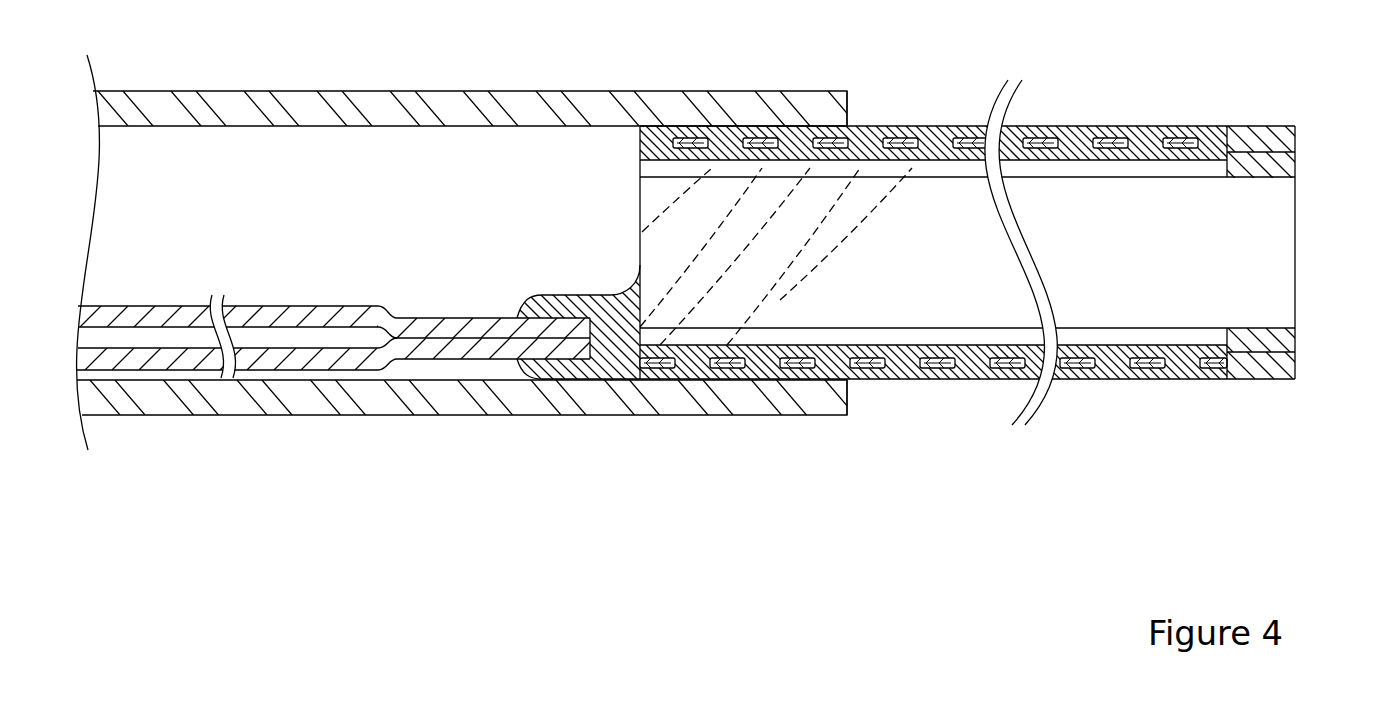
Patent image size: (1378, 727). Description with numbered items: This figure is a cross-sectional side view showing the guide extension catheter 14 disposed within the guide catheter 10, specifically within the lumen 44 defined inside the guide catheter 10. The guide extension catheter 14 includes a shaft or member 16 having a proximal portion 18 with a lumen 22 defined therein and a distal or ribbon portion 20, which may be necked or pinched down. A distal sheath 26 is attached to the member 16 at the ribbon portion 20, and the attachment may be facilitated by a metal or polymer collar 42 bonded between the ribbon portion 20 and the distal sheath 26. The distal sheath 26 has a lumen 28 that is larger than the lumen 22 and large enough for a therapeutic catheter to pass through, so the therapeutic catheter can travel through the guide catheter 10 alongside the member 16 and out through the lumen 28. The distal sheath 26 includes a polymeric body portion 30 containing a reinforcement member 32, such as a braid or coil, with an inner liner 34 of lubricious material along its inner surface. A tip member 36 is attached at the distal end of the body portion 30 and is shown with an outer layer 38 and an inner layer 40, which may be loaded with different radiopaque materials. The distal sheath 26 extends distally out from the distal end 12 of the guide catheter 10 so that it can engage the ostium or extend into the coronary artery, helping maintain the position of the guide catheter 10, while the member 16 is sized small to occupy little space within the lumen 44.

The guide catheter 10 is at (520, 102).
The distal end 12 is at (848, 397).
The guide extension catheter 14 is at (383, 212).
The member 16 is at (353, 372).
The proximal portion 18 is at (190, 363).
The ribbon portion 20 is at (563, 353).
The lumen 22 is at (152, 337).
The distal sheath 26 is at (1077, 124).
The lumen 28 is at (1253, 240).
The body portion 30 is at (1175, 125).
The reinforcement member 32 is at (900, 140).
The inner liner 34 is at (790, 168).
The tip member 36 is at (1262, 124).
The outer layer 38 is at (1290, 137).
The inner layer 40 is at (1282, 165).
The collar 42 is at (780, 300).
The lumen 44 is at (233, 155).